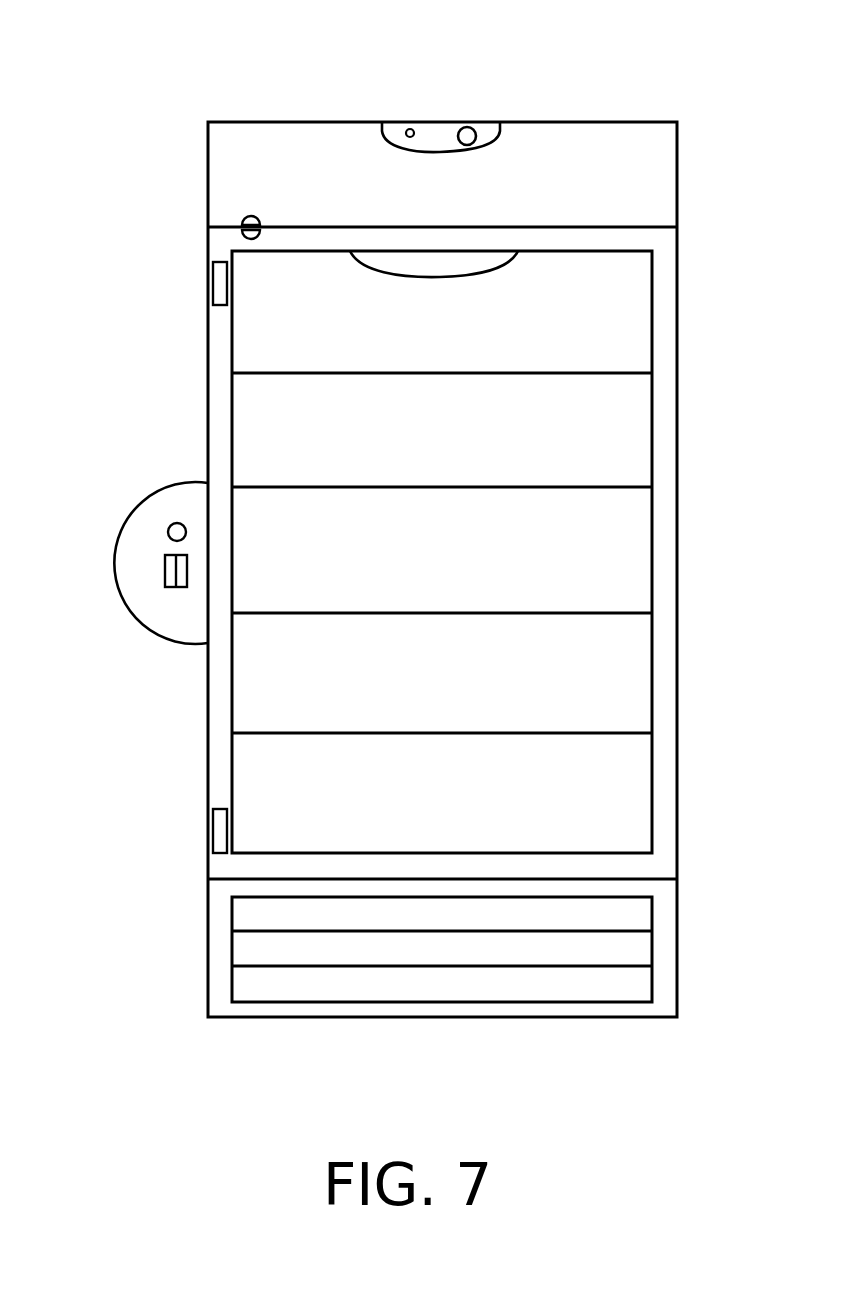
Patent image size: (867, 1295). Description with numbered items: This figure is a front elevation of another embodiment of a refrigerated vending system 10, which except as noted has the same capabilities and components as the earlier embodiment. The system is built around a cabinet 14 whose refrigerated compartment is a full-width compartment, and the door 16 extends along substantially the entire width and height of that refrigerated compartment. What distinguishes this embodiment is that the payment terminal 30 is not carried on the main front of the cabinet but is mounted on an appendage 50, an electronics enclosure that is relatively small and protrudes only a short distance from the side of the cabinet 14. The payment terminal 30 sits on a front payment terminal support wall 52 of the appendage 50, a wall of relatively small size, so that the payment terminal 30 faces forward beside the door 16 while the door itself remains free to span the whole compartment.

The refrigerated vending system 10 is at (128, 862).
The cabinet 14 is at (690, 685).
The door 16 is at (330, 249).
The payment terminal 30 is at (142, 573).
The appendage 50 is at (148, 638).
The payment terminal support wall 52 is at (155, 517).